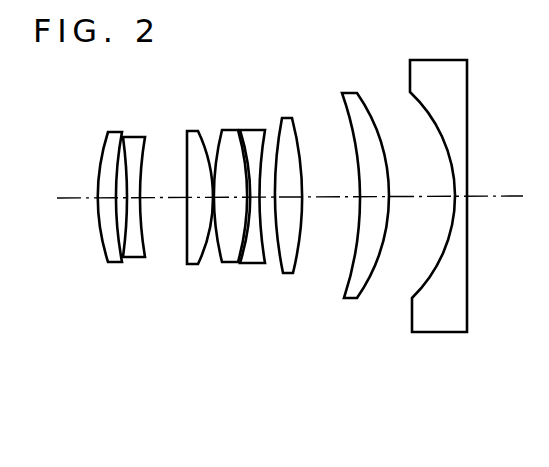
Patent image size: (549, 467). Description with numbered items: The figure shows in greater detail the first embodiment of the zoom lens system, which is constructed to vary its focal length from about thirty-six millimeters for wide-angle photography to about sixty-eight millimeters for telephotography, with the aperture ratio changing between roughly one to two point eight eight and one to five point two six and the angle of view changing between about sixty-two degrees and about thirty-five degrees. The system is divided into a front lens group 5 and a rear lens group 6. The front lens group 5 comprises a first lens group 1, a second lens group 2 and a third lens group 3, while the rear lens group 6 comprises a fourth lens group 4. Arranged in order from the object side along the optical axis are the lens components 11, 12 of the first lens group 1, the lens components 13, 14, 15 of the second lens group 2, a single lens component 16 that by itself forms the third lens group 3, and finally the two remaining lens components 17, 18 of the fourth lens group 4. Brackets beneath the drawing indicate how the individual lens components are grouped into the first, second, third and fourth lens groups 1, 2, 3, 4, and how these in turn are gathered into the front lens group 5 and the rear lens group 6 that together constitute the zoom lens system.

The first lens group 1 is at (153, 314).
The second lens group 2 is at (175, 314).
The third lens group 3 is at (275, 314).
The fourth lens group 4 is at (457, 377).
The front lens group 5 is at (308, 353).
The rear lens group 6 is at (370, 413).
The lens component 11 is at (113, 263).
The lens component 12 is at (136, 258).
The lens component 13 is at (193, 265).
The lens component 14 is at (228, 263).
The lens component 15 is at (253, 264).
The lens component 16 is at (288, 274).
The lens component 17 is at (348, 299).
The lens component 18 is at (440, 333).